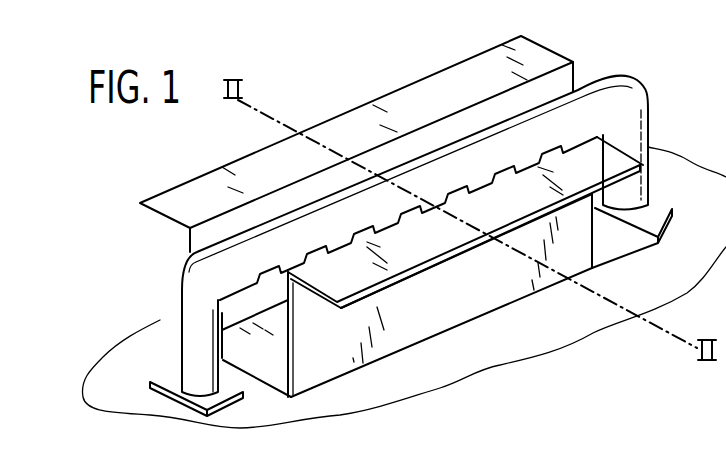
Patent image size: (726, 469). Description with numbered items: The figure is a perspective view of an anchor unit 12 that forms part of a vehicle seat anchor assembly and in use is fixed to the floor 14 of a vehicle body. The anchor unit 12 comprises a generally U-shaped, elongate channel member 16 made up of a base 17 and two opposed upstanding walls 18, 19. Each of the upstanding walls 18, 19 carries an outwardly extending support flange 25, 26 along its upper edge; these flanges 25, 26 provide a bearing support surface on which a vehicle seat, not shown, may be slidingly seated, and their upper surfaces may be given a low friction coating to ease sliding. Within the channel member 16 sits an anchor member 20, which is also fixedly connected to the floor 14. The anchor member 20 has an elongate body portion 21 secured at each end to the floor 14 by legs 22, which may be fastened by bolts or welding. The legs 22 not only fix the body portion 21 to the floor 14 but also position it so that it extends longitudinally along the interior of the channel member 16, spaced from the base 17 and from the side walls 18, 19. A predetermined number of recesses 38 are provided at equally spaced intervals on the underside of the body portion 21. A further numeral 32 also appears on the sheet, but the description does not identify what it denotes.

The anchor unit 12 is at (322, 149).
The floor 14 is at (407, 366).
The elongate channel member 16 is at (440, 303).
The base 17 is at (257, 363).
The upstanding wall 18 is at (432, 327).
The upstanding wall 19 is at (350, 144).
The anchor member 20 is at (407, 235).
The elongate body portion 21 is at (382, 192).
The legs 22 is at (197, 337).
The support flange 25 is at (203, 183).
The support flange 26 is at (431, 240).
The recesses 38 is at (355, 234).
The mounting surface 32 is at (167, 465).